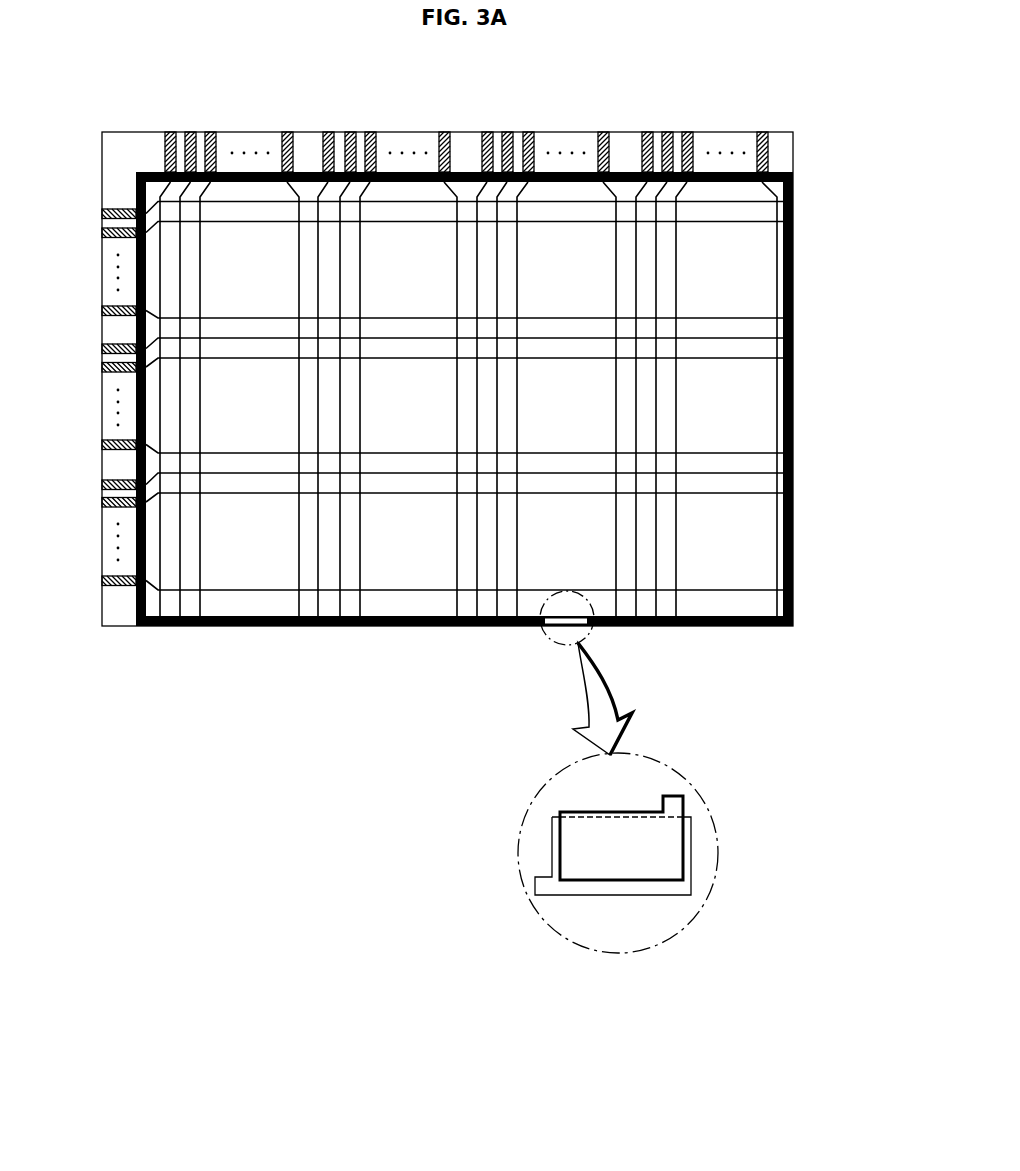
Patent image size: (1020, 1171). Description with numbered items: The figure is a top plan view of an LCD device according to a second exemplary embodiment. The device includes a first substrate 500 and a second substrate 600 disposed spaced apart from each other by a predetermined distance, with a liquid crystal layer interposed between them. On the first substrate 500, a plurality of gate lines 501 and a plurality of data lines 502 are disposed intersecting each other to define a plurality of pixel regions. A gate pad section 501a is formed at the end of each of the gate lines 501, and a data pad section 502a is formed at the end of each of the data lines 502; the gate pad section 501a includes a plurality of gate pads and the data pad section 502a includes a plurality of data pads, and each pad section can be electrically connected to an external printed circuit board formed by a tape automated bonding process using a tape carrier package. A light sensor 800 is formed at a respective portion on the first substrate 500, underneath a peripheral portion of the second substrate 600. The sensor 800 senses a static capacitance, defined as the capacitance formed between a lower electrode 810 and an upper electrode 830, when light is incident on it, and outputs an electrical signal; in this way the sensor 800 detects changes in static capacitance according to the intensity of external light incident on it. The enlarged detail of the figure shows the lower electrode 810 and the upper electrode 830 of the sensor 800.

The first substrate 500 is at (778, 136).
The gate lines 501 is at (267, 592).
The gate pad section 501a is at (123, 605).
The data lines 502 is at (360, 573).
The data pad section 502a is at (152, 143).
The second substrate 600 is at (760, 275).
The light sensor 800 is at (560, 627).
The lower electrode 810 is at (622, 888).
The upper electrode 830 is at (673, 797).